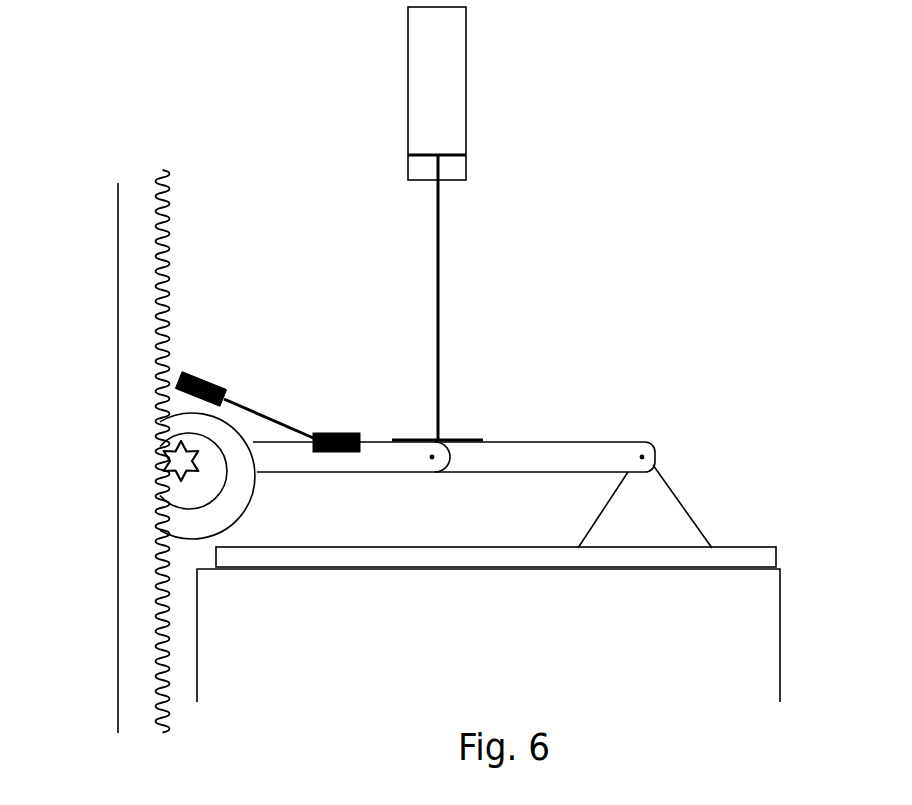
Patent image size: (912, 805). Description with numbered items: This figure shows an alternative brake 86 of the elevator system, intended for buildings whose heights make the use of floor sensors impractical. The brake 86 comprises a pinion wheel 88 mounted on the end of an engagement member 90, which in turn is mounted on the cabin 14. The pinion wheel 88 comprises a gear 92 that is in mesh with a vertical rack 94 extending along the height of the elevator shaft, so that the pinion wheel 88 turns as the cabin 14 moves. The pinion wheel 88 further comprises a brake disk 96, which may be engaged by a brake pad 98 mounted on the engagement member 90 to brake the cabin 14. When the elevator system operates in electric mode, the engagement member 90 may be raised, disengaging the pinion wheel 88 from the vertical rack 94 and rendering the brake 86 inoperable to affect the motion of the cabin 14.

The cabin 14 is at (750, 645).
The brake 86 is at (566, 220).
The pinion wheel 88 is at (249, 379).
The engagement member 90 is at (553, 452).
The gear 92 is at (167, 453).
The vertical rack 94 is at (167, 233).
The brake disk 96 is at (177, 520).
The brake pad 98 is at (204, 381).